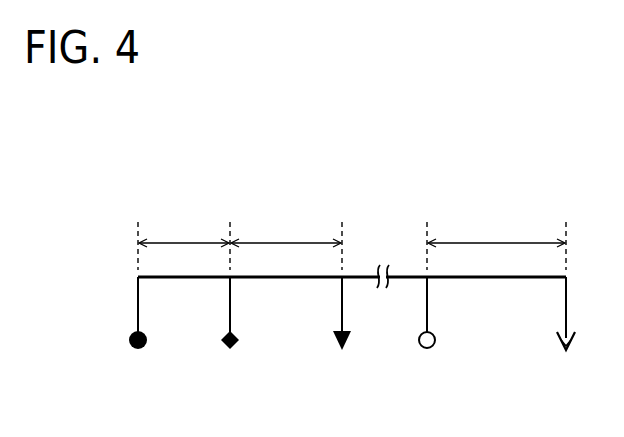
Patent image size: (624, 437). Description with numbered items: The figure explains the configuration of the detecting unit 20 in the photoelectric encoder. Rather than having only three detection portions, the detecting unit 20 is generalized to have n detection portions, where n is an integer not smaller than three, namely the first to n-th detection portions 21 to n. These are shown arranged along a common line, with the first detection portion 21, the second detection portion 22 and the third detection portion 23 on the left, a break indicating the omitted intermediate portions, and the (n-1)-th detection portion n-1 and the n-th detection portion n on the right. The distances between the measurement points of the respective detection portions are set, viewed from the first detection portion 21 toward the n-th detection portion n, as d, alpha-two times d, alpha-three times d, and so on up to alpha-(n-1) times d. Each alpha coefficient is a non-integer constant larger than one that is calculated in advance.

The detecting unit 20 is at (97, 216).
The first detection portion 21 is at (140, 349).
The second detection portion 22 is at (232, 349).
The third detection portion 23 is at (344, 349).
The (n-1)-th detection portion n-1 is at (429, 349).
The n-th detection portion n is at (568, 349).